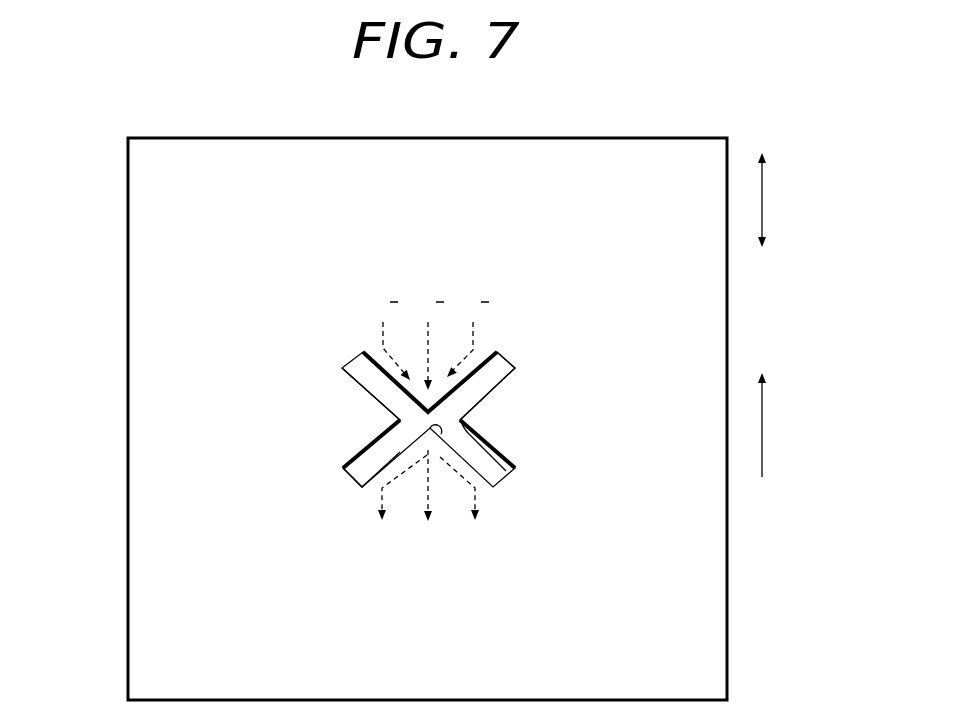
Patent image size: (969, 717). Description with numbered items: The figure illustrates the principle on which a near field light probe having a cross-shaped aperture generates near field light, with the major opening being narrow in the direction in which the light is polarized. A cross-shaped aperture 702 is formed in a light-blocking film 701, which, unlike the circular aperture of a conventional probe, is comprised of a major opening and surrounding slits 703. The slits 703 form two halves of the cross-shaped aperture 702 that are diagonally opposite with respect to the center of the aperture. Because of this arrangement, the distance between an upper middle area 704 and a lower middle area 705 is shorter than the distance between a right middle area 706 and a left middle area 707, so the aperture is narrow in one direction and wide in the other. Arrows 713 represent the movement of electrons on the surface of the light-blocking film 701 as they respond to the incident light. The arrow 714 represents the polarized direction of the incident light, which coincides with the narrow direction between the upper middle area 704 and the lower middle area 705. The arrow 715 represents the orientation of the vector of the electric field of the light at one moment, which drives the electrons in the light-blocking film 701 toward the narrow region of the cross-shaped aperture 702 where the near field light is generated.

The light-blocking film 701 is at (177, 337).
The cross-shaped aperture 702 is at (374, 437).
The slits 703 is at (360, 486).
The upper middle area 704 is at (432, 412).
The lower middle area 705 is at (441, 435).
The right middle area 706 is at (507, 478).
The left middle area 707 is at (397, 420).
The arrows representing movement of electrons 713 is at (473, 337).
The arrow representing polarized direction of incident light 714 is at (762, 202).
The arrow representing orientation of electric field vector 715 is at (762, 444).